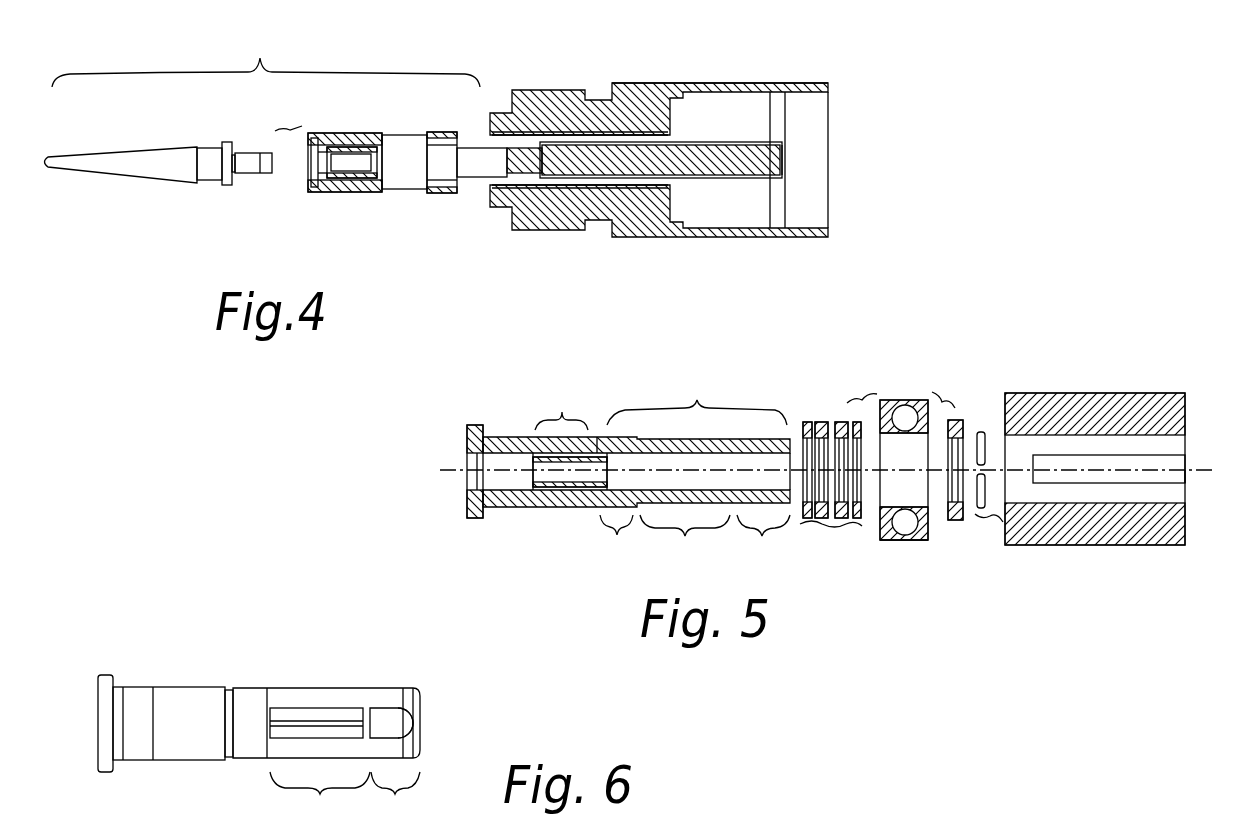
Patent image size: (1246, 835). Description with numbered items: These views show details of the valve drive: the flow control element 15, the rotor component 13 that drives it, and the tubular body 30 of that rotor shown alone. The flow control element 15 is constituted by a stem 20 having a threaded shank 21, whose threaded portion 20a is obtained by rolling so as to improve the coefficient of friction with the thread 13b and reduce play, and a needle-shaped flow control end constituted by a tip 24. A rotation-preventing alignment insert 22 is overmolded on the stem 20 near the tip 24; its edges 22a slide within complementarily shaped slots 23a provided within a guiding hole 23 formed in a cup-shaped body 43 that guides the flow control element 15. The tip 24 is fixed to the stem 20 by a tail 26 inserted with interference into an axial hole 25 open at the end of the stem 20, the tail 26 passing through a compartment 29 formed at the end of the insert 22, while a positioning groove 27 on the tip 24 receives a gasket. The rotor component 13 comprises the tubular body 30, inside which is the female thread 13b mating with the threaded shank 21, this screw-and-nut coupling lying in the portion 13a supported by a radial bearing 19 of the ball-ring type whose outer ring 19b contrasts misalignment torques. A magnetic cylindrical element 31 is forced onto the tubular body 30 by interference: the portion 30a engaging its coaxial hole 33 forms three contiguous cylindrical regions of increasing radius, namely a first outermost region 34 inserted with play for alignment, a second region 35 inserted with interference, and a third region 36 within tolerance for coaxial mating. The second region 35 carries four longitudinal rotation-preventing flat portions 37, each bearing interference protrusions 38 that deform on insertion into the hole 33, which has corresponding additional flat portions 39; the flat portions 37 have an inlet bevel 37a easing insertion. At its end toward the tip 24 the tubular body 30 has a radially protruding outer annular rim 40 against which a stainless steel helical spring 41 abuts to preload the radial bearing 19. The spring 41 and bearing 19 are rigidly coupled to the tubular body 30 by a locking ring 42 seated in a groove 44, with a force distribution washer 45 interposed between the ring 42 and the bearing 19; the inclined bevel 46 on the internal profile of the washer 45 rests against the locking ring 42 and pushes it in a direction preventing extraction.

In FIG. 6, the rotor component 13 is at (309, 712).
In FIG. 5, the portion of the rotor component 13a is at (562, 400).
In FIG. 5, the female thread 13b is at (564, 470).
In FIG. 4, the flow control element 15 is at (266, 53).
In FIG. 5, the radial bearing 19 is at (894, 440).
In FIG. 5, the outer ring 19b is at (890, 541).
In FIG. 4, the stem 20 is at (714, 118).
In FIG. 4, the threaded portion 20a is at (712, 180).
In FIG. 4, the threaded shank 21 is at (727, 160).
In FIG. 4, the rotation-preventing alignment insert 22 is at (325, 185).
In FIG. 4, the edges 22a is at (441, 133).
In FIG. 4, the guiding hole 23 is at (659, 161).
In FIG. 4, the slots 23a is at (630, 136).
In FIG. 4, the tip 24 is at (152, 162).
In FIG. 4, the axial hole 25 is at (357, 166).
In FIG. 4, the tail 26 is at (252, 152).
In FIG. 4, the positioning groove 27 is at (208, 186).
In FIG. 4, the compartment 29 is at (312, 183).
In FIG. 5, the tubular body 30 is at (589, 473).
In FIG. 6, the tubular body 30 is at (250, 712).
In FIG. 5, the portion of the tubular body 30a is at (697, 397).
In FIG. 5, the magnetic cylindrical element 31 is at (1105, 447).
In FIG. 5, the coaxial hole 33 is at (1140, 450).
In FIG. 5, the first outermost region 34 is at (763, 545).
In FIG. 6, the first outermost region 34 is at (395, 801).
In FIG. 5, the second region 35 is at (685, 545).
In FIG. 6, the second region 35 is at (320, 802).
In FIG. 5, the third region 36 is at (618, 546).
In FIG. 6, the flat portions 37 is at (390, 720).
In FIG. 6, the inlet bevel 37a is at (402, 727).
In FIG. 6, the interference protrusions 38 is at (338, 725).
In FIG. 5, the additional flat portions 39 is at (1183, 470).
In FIG. 5, the outer annular rim 40 is at (472, 426).
In FIG. 6, the outer annular rim 40 is at (110, 678).
In FIG. 5, the helical spring 41 is at (790, 420).
In FIG. 5, the locking ring 42 is at (965, 521).
In FIG. 4, the cup-shaped body 43 is at (731, 78).
In FIG. 5, the groove 44 is at (597, 432).
In FIG. 6, the groove 44 is at (225, 690).
In FIG. 5, the force distribution washer 45 is at (981, 512).
In FIG. 5, the inclined bevel 46 is at (972, 415).